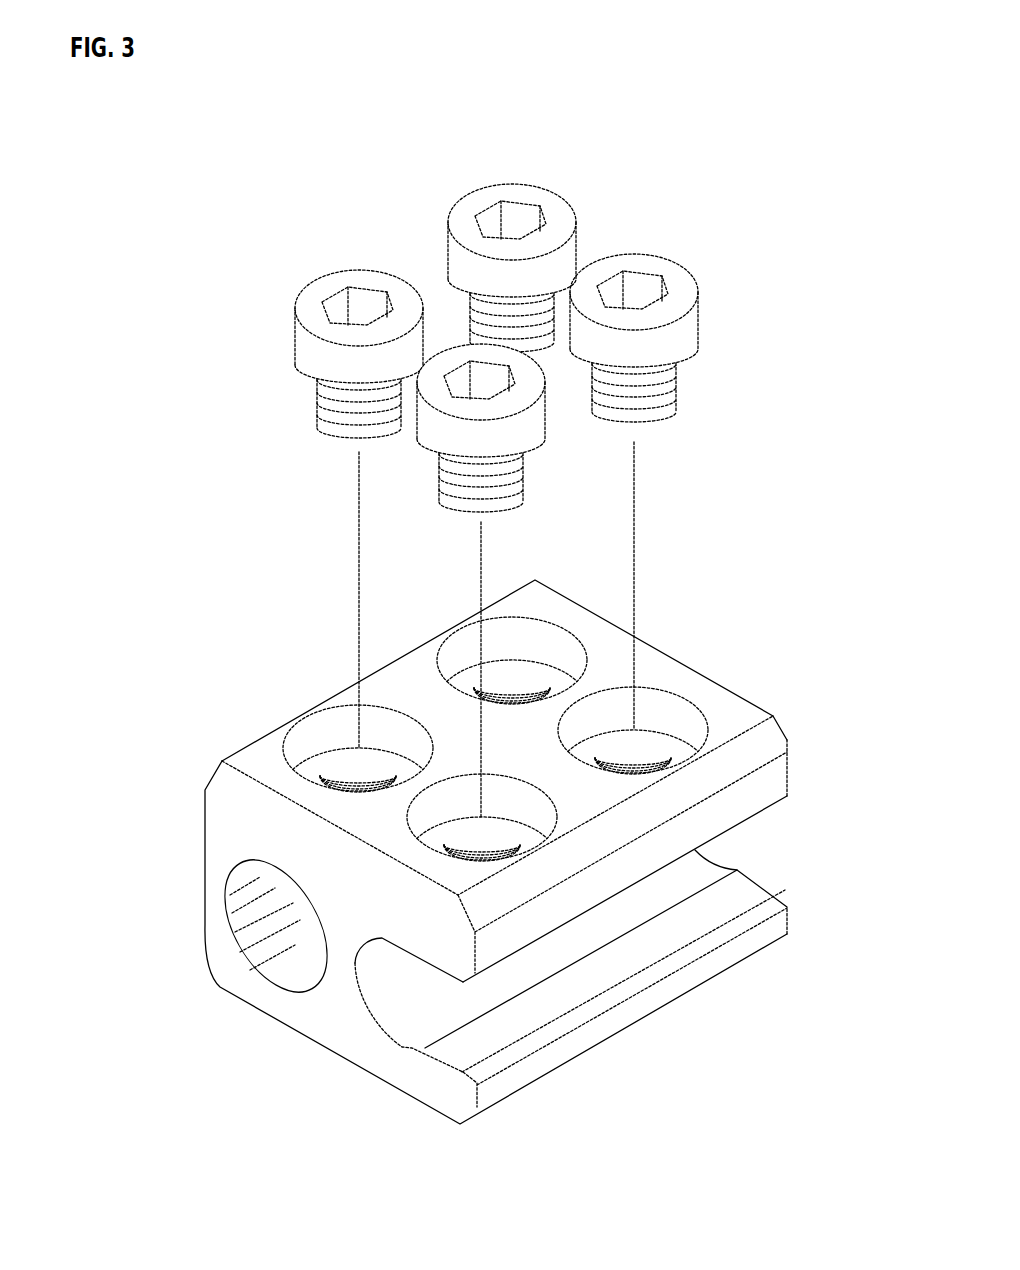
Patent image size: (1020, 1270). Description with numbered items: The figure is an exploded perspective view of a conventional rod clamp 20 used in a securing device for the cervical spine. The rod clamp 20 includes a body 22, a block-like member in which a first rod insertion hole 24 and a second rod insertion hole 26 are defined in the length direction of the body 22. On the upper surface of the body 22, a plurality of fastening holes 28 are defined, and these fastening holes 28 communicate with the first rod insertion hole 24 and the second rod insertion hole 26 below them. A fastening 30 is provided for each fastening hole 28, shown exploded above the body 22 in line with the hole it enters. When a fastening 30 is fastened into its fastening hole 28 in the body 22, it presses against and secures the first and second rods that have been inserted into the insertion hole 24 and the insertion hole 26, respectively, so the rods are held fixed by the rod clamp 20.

The rod clamp 20 is at (493, 849).
The body 22 is at (652, 663).
The insertion hole 24 is at (282, 943).
The insertion hole 26 is at (405, 1003).
The fastening hole 28 is at (523, 648).
The fastening 30 is at (447, 422).